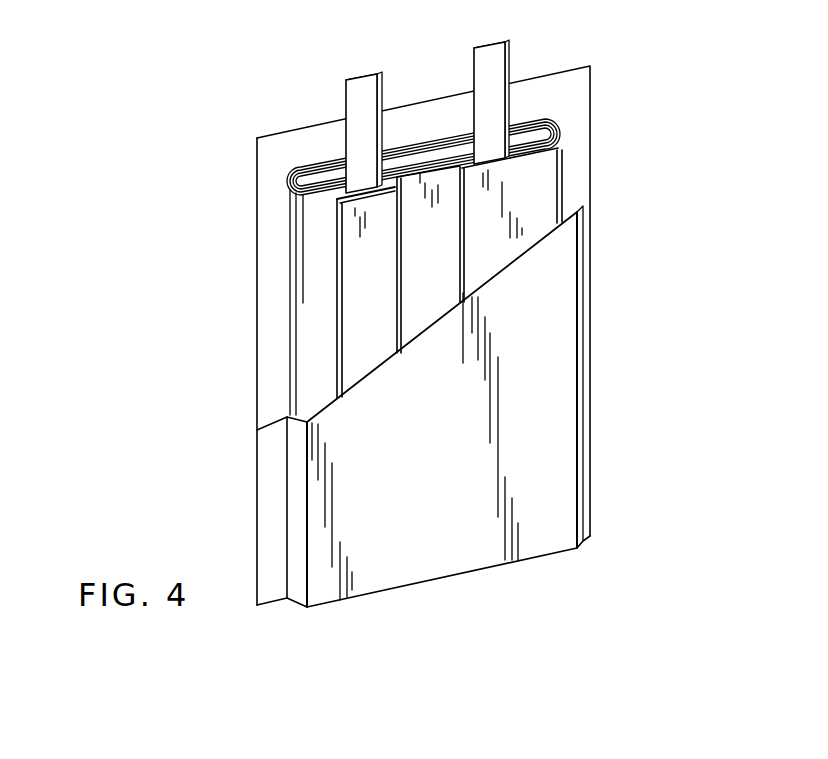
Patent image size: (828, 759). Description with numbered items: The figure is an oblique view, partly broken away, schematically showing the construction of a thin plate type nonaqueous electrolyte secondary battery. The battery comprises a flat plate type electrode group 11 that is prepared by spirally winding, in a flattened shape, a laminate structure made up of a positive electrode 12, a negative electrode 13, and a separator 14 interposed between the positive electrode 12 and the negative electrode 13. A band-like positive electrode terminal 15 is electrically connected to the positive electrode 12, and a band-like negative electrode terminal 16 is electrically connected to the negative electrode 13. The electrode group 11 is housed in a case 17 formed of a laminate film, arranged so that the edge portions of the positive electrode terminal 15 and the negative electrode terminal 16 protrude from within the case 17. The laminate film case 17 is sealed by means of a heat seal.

The electrode group 11 is at (485, 267).
The positive electrode 12 is at (643, 271).
The negative electrode 13 is at (377, 295).
The separator 14 is at (448, 225).
The positive electrode terminal 15 is at (492, 57).
The negative electrode terminal 16 is at (364, 88).
The case 17 is at (553, 410).